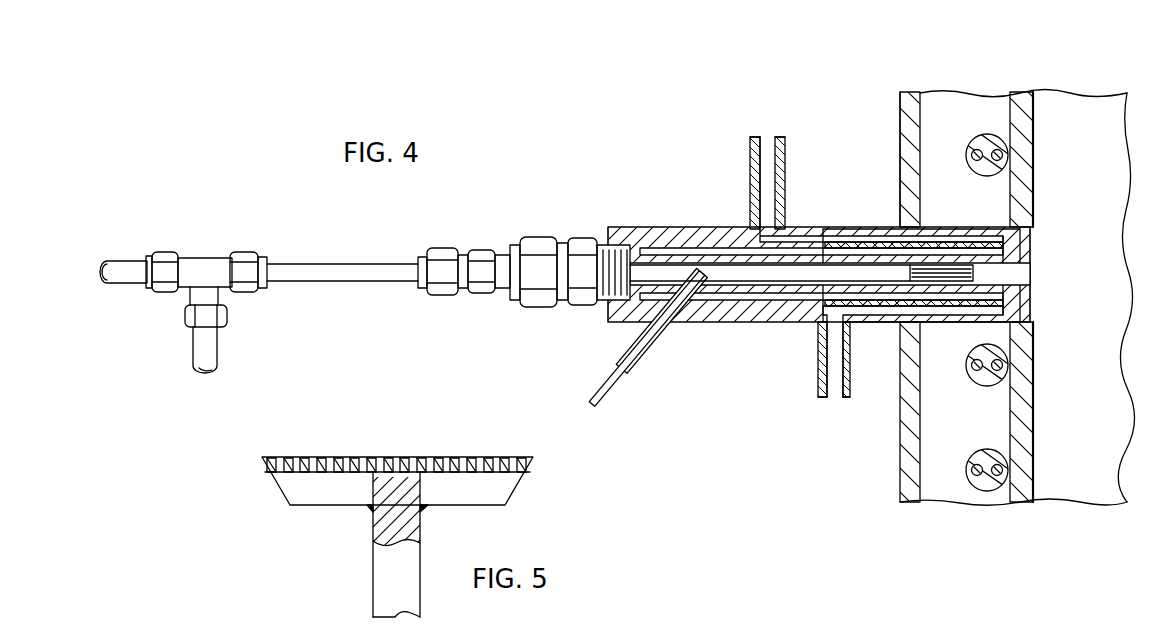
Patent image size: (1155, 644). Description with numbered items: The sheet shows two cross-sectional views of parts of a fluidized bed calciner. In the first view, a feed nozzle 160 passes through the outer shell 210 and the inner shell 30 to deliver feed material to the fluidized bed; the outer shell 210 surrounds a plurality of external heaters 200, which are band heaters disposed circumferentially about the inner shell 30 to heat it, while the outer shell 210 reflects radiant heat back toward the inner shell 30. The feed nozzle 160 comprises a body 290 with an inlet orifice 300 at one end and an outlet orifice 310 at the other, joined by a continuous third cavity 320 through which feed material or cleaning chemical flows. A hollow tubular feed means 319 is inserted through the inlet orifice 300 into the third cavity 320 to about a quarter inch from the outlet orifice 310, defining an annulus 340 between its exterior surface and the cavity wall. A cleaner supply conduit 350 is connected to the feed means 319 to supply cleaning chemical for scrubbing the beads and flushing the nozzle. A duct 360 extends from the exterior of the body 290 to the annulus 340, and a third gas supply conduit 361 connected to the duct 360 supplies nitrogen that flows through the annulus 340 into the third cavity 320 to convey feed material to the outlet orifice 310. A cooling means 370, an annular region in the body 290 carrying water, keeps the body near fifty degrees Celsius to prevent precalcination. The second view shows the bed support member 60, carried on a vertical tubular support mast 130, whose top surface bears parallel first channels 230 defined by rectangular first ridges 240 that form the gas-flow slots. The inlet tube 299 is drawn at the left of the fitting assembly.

In FIG. 4, the inner shell 30 is at (1023, 105).
In FIG. 5, the member 60 is at (268, 497).
In FIG. 5, the support mast 130 is at (380, 570).
In FIG. 4, the feed nozzle 160 is at (645, 196).
In FIG. 4, the external heaters 200 is at (980, 136).
In FIG. 4, the outer shell 210 is at (900, 143).
In FIG. 5, the first channels 230 is at (327, 457).
In FIG. 5, the first ridges 240 is at (388, 457).
In FIG. 4, the body 290 is at (616, 229).
In FIG. 4, the inlet tube 299 is at (118, 261).
In FIG. 4, the inlet orifice 300 is at (604, 302).
In FIG. 4, the outlet orifice 310 is at (1036, 280).
In FIG. 4, the feed means 319 is at (325, 268).
In FIG. 4, the third cavity 320 is at (1032, 270).
In FIG. 4, the annulus 340 is at (717, 251).
In FIG. 4, the cleaner supply conduit 350 is at (200, 341).
In FIG. 4, the duct 360 is at (634, 350).
In FIG. 4, the third gas supply conduit 361 is at (615, 390).
In FIG. 4, the cooling means 370 is at (767, 142).